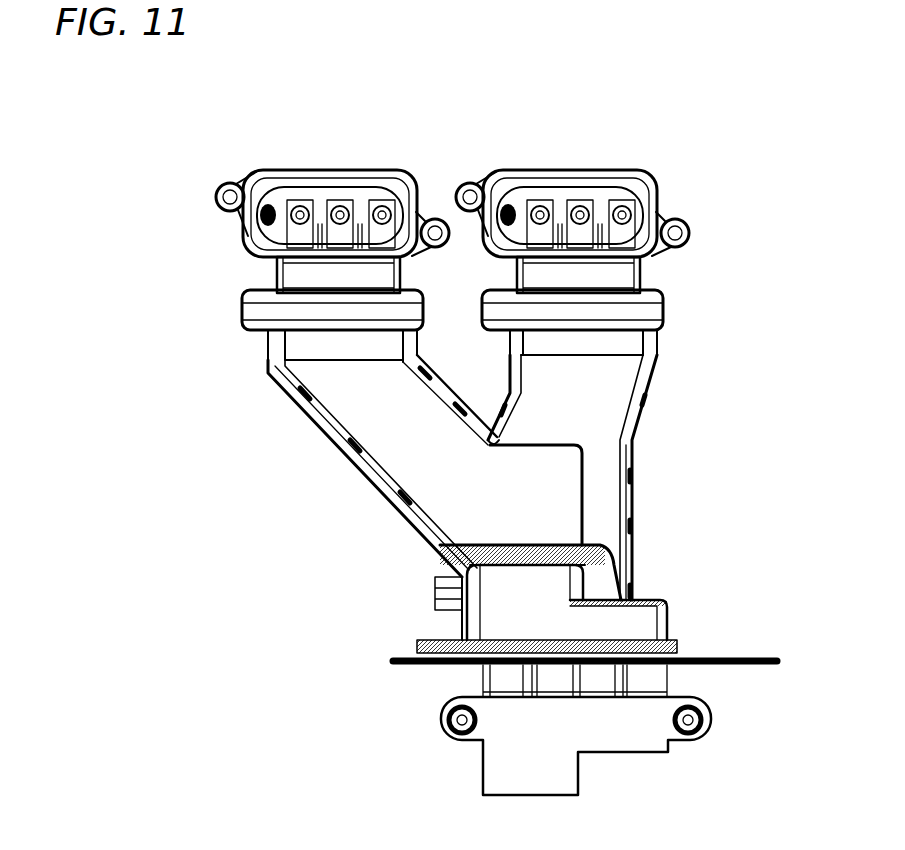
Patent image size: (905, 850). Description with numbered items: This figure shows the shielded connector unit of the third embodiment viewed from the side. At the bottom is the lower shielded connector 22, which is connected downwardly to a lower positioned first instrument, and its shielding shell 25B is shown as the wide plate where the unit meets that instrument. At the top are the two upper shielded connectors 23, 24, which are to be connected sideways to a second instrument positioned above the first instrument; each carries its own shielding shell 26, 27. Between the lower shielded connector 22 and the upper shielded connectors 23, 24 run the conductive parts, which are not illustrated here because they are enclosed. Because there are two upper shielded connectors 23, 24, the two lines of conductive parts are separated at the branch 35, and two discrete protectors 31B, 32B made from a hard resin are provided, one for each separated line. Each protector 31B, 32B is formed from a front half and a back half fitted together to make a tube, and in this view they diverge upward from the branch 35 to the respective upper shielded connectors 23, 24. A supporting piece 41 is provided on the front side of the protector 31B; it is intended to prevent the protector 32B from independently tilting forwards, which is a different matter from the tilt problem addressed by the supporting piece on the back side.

The lower shielded connector 22 is at (412, 719).
The upper shielded connector 23 is at (338, 143).
The upper shielded connector 24 is at (578, 143).
The shielding shell 25B is at (765, 652).
The shielding shell 26 is at (308, 170).
The shielding shell 27 is at (598, 170).
The protector 31B is at (370, 432).
The protector 32B is at (607, 407).
The branch 35 is at (479, 395).
The supporting piece 41 is at (555, 497).